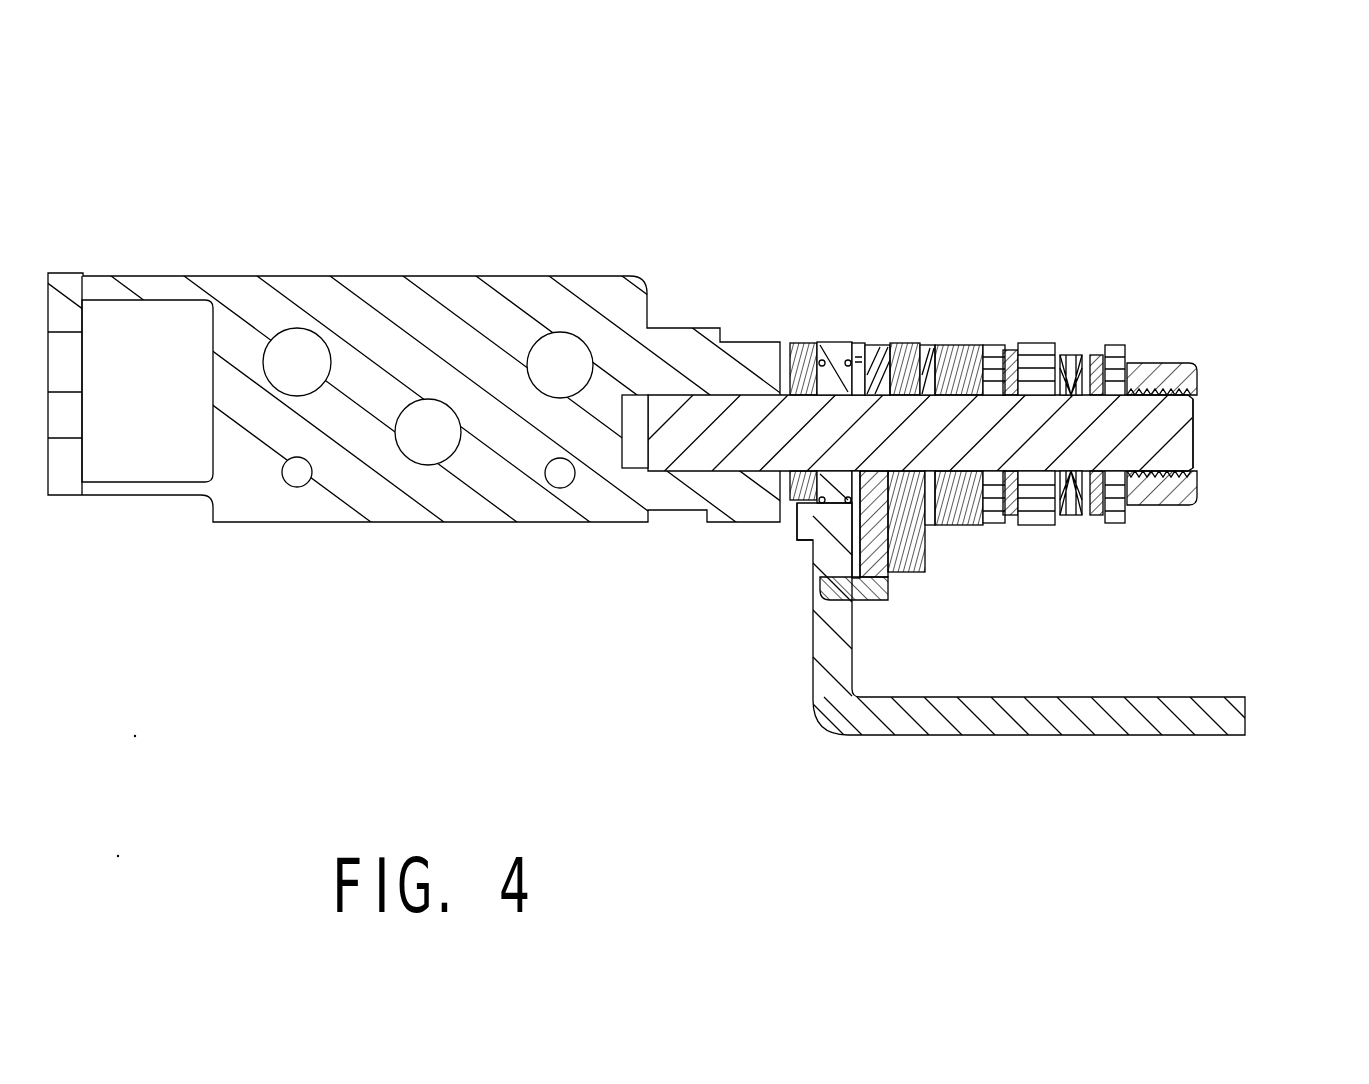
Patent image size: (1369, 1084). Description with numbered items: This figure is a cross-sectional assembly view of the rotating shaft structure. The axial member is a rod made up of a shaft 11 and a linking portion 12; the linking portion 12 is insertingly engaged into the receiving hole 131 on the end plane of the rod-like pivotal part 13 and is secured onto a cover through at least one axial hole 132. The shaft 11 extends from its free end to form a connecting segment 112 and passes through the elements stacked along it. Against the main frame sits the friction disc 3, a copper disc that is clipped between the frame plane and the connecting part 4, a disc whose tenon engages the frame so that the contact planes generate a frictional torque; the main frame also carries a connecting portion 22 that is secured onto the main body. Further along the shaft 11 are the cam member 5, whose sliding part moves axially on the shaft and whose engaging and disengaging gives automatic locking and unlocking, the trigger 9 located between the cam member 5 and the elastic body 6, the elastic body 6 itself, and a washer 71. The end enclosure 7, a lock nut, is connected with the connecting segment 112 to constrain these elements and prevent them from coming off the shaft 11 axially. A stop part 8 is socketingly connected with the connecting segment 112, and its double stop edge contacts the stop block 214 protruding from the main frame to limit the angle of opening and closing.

The rod-like pivotal part 13 is at (403, 307).
The receiving hole 131 is at (638, 418).
The axial hole 132 is at (428, 432).
The linking portion 12 is at (708, 460).
The shaft 11 is at (1168, 428).
The connecting segment 112 is at (1197, 393).
The stop part 8 is at (802, 348).
The friction disc 3 is at (858, 357).
The cam member 5 is at (892, 333).
The elastic body 6 is at (997, 333).
The connecting part 4 is at (882, 582).
The trigger 9 is at (1035, 528).
The washer 71 is at (1112, 520).
The end enclosure 7 is at (1168, 508).
The connecting portion 22 is at (1140, 722).
The stop block 214 is at (807, 534).